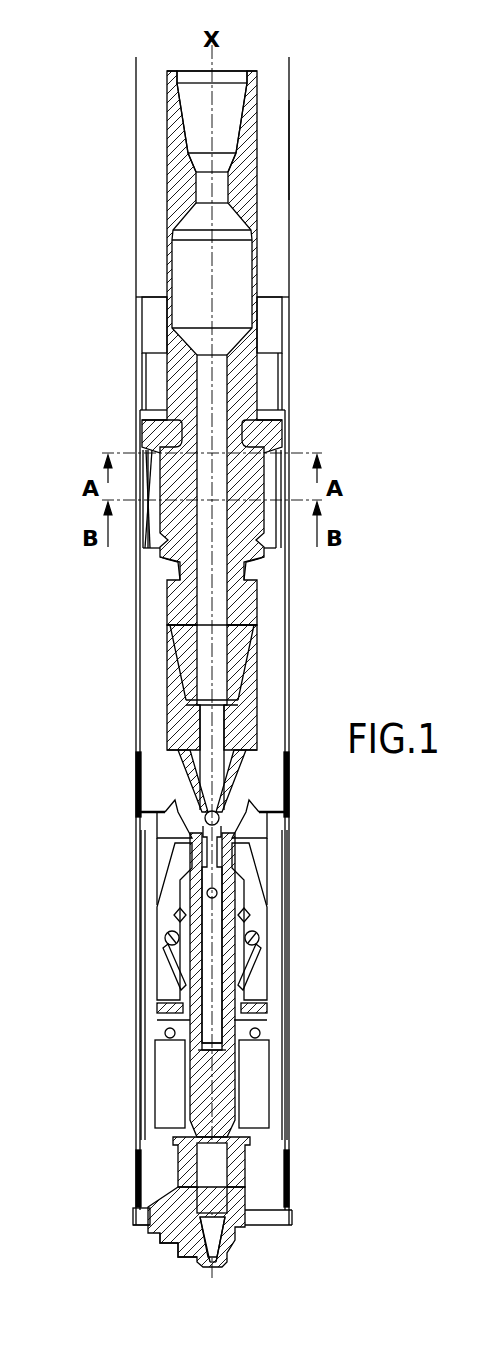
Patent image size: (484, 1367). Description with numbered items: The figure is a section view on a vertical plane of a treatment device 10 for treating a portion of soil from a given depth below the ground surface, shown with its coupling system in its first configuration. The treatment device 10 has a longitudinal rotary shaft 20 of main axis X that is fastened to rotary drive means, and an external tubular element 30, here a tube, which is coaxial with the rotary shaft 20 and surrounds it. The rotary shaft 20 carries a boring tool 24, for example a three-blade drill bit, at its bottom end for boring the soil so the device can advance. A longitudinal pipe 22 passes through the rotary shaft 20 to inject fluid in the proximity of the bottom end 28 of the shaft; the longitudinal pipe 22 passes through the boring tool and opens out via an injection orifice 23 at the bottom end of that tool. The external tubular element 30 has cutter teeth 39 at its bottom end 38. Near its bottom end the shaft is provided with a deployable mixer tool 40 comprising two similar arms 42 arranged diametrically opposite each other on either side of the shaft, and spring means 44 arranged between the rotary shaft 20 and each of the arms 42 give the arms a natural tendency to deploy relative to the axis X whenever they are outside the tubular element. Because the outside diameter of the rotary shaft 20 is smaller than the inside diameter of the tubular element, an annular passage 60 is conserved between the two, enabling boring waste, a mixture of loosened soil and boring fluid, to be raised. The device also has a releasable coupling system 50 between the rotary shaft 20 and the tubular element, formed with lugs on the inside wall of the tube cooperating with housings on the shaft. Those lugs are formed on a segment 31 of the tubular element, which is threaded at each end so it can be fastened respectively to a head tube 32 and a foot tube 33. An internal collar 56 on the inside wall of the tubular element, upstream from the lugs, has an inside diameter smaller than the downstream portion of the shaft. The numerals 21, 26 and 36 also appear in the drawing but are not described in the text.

The treatment device 10 is at (306, 317).
The rotary shaft 20 is at (263, 688).
The shoulder 21 is at (266, 584).
The longitudinal pipe 22 is at (220, 731).
The injection orifice 23 is at (213, 1266).
The boring tool 24 is at (178, 1245).
The upper cavity 26 is at (190, 70).
The bottom end of the shaft 28 is at (252, 1238).
The external tubular element 30 is at (292, 640).
The segment 31 is at (296, 412).
The head tube 32 is at (290, 150).
The foot tube 33 is at (288, 887).
The outer tube 36 is at (291, 62).
The bottom end of the tubular element 38 is at (128, 1206).
The cutter teeth 39 is at (137, 1223).
The deployable mixer tool 40 is at (275, 1028).
The arms 42 is at (263, 978).
The spring means 44 is at (166, 975).
The releasable coupling system 50 is at (297, 444).
The internal collar 56 is at (163, 436).
The annular passage 60 is at (266, 802).